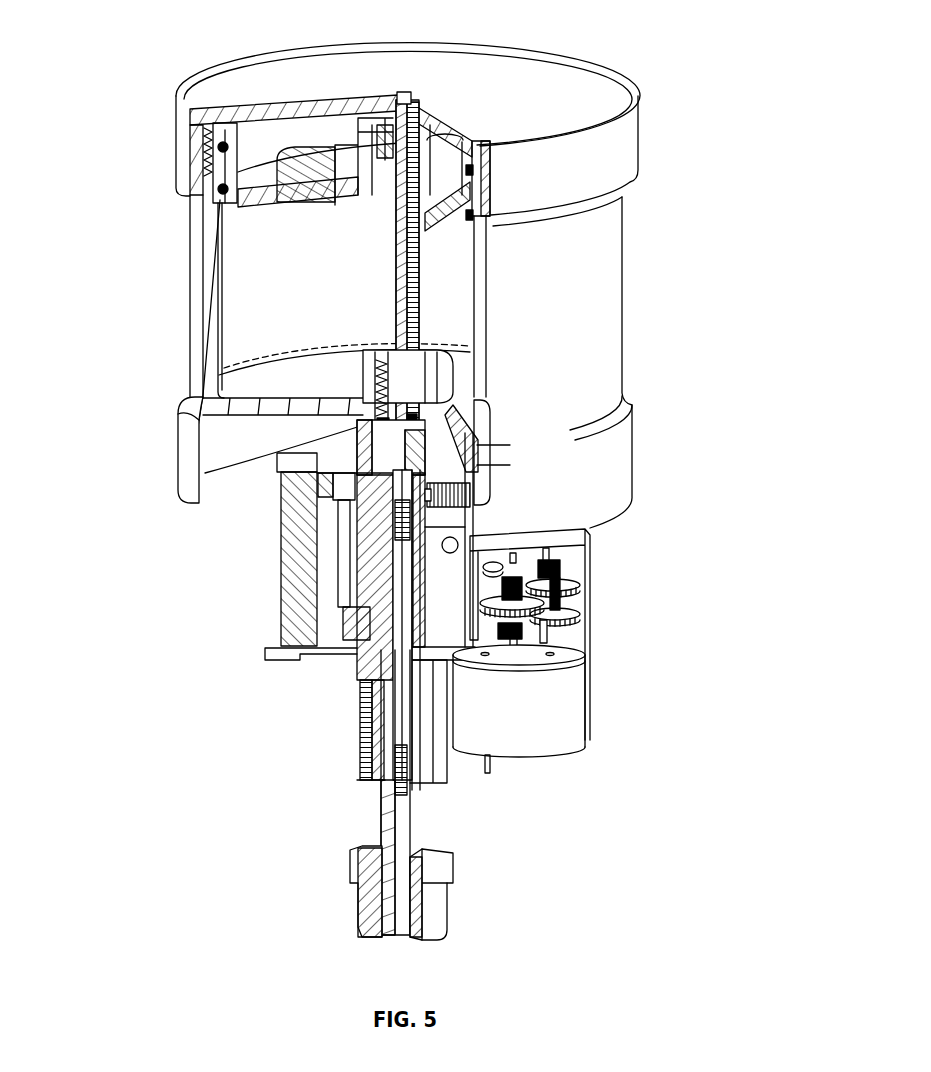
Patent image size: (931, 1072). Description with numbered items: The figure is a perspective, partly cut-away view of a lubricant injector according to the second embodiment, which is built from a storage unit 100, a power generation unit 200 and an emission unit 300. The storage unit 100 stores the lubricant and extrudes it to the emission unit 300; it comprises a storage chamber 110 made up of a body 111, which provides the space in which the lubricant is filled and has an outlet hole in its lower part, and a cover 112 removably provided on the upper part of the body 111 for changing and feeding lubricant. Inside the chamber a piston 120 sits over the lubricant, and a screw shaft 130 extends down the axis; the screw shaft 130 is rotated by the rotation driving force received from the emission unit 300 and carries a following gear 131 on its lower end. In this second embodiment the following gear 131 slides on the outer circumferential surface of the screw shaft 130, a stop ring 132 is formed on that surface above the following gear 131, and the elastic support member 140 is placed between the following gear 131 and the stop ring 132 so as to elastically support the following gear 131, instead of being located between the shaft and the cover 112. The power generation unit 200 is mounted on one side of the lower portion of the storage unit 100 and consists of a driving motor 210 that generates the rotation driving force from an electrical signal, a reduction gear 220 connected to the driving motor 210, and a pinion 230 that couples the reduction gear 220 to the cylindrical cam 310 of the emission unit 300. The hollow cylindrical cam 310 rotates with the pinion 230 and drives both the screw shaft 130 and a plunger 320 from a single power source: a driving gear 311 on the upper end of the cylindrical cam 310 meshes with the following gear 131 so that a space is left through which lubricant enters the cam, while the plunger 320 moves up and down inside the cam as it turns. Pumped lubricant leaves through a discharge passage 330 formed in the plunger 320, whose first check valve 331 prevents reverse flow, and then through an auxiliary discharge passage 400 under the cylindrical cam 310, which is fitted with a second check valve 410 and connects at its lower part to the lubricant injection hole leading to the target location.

The storage unit 100 is at (680, 262).
The storage chamber 110 is at (83, 230).
The body 111 is at (213, 258).
The cover 112 is at (196, 152).
The piston 120 is at (278, 203).
The screw shaft 130 is at (398, 310).
The following gear 131 is at (372, 447).
The stop ring 132 is at (372, 388).
The elastic support member 140 is at (366, 350).
The power generation unit 200 is at (742, 532).
The driving motor 210 is at (562, 720).
The reduction gear 220 is at (575, 598).
The pinion 230 is at (570, 530).
The emission unit 300 is at (260, 786).
The cylindrical cam 310 is at (288, 656).
The driving gear 311 is at (300, 522).
The plunger 320 is at (355, 662).
The discharge passage 330 is at (385, 690).
The first check valve 331 is at (320, 608).
The auxiliary discharge passage 400 is at (368, 826).
The second check valve 410 is at (357, 773).